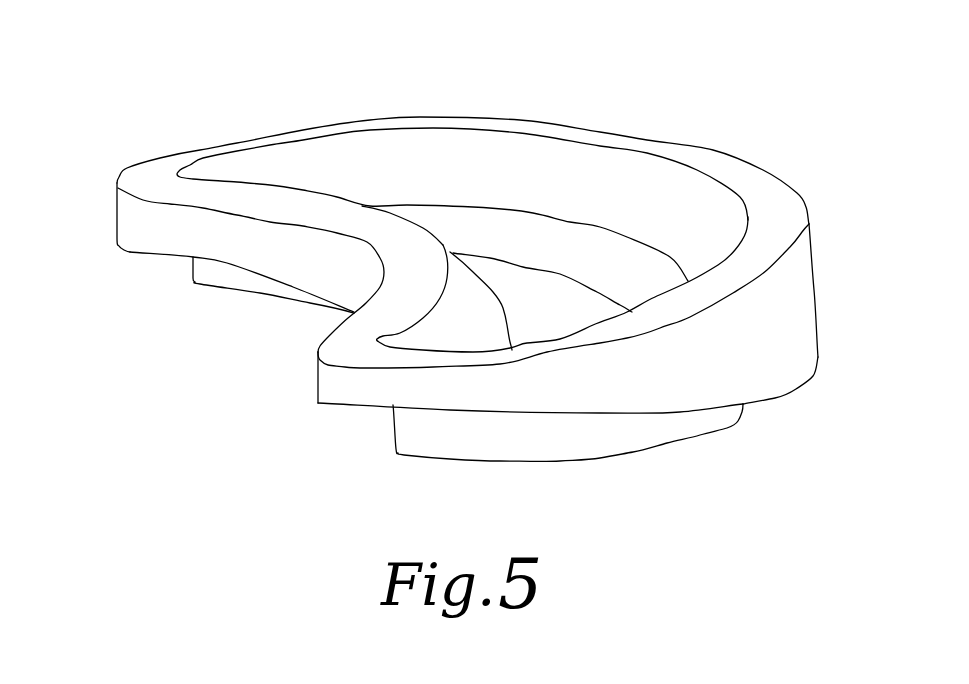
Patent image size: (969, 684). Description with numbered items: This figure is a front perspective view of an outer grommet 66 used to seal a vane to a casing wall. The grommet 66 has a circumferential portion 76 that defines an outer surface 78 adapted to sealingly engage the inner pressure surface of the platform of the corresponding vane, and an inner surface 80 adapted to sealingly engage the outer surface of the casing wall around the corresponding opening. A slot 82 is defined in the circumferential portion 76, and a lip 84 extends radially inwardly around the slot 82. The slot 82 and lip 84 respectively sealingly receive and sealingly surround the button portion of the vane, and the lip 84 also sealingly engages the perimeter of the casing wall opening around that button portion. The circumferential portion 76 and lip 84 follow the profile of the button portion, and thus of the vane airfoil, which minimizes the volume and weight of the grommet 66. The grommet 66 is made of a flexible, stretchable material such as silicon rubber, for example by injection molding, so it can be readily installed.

The outer grommet 66 is at (125, 157).
The circumferential portion 76 is at (789, 307).
The outer surface 78 is at (712, 165).
The inner surface 80 is at (773, 397).
The slot 82 is at (528, 300).
The lip 84 is at (418, 436).